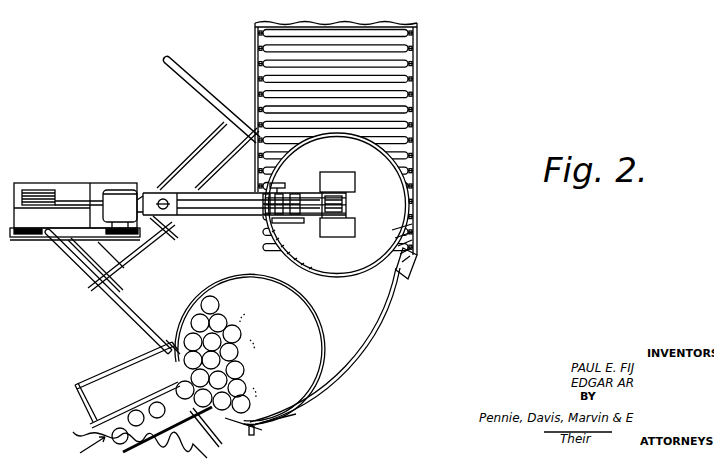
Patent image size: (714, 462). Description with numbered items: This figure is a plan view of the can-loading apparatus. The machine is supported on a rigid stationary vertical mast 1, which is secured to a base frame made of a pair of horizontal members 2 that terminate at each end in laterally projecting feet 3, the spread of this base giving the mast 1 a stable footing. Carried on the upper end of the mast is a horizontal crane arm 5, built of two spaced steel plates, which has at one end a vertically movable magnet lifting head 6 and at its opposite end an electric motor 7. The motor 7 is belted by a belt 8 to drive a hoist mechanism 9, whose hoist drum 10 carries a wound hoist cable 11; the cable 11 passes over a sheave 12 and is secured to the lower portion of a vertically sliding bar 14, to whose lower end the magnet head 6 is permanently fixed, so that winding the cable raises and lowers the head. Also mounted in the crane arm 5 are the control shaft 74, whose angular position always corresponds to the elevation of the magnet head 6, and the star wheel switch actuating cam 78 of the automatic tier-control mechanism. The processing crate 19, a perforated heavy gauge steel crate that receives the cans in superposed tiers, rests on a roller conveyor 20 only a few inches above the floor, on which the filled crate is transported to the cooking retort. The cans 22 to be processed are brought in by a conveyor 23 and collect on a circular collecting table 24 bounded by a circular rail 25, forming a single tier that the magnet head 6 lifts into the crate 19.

The vertical mast 1 is at (176, 222).
The horizontal members 2 is at (204, 147).
The laterally projecting feet 3 is at (191, 71).
The horizontal crane arm 5 is at (206, 216).
The magnet lifting head 6 is at (393, 215).
The electric motor 7 is at (121, 195).
The belt 8 is at (78, 236).
The hoist mechanism 9 is at (30, 218).
The hoist drum 10 is at (48, 195).
The hoist cable 11 is at (240, 216).
The sheave 12 is at (322, 208).
The vertically sliding bar 14 is at (338, 195).
The processing crate 19 is at (393, 157).
The roller conveyor 20 is at (400, 80).
The cans 22 is at (156, 402).
The conveyor 23 is at (157, 426).
The circular collecting table 24 is at (302, 393).
The circular rail 25 is at (322, 328).
The control shaft 74 is at (298, 192).
The star wheel switch actuating cam 78 is at (281, 185).